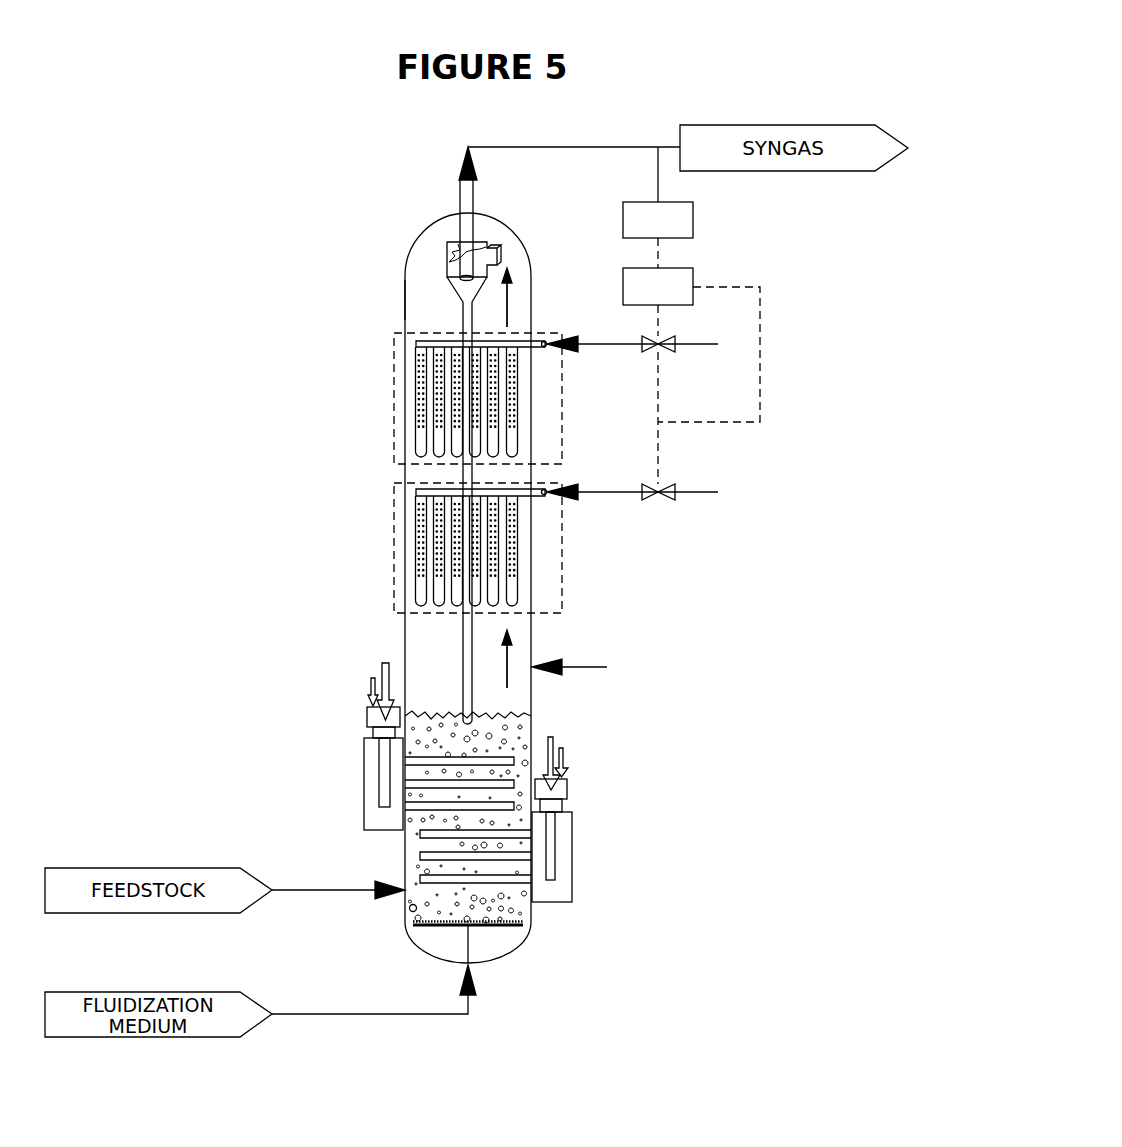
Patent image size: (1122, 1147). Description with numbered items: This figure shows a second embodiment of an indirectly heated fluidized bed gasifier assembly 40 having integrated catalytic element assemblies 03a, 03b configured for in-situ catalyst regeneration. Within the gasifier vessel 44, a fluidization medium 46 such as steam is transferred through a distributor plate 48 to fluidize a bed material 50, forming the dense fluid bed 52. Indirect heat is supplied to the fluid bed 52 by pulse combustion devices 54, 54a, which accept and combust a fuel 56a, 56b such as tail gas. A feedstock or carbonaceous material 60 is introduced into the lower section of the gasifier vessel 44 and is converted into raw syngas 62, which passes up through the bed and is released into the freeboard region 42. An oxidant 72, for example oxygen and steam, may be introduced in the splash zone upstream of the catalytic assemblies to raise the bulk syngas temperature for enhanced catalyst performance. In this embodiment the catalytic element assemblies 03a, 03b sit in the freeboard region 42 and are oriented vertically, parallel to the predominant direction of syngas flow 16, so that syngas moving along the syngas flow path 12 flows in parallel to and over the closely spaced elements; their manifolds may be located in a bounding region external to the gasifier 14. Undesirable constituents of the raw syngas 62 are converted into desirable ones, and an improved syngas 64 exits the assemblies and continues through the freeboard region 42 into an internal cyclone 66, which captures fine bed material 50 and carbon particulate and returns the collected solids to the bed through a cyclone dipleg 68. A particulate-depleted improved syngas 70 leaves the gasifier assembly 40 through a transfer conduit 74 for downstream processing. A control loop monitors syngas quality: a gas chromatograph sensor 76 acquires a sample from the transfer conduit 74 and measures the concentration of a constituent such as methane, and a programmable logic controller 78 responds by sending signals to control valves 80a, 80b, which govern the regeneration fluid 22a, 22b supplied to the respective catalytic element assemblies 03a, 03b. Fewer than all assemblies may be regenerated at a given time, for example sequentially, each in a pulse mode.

The indirectly heated fluidized bed gasifier assembly 40 is at (403, 262).
The freeboard region 42 is at (418, 290).
The gasifier vessel 44 is at (418, 313).
The syngas flow path 12 is at (487, 322).
The bounding region external to the gasifier 14 is at (549, 317).
The predominant direction of syngas flow 16 is at (509, 302).
The improved syngas 64 is at (509, 302).
The raw syngas 62 is at (509, 663).
The internal cyclone 66 is at (497, 250).
The cyclone dipleg 68 is at (462, 318).
The particulate-depleted syngas of improved quality 70 is at (543, 147).
The transfer conduit 74 is at (595, 147).
The gas chromatograph sensor 76 is at (693, 218).
The programmable logic controller 78 is at (693, 272).
The catalytic element assembly 03a is at (562, 432).
The catalytic element assembly 03b is at (562, 580).
The regeneration fluid 22a is at (602, 344).
The regeneration fluid 22b is at (602, 492).
The control valve 80a is at (658, 359).
The control valve 80b is at (658, 507).
The oxidant 72 is at (588, 667).
The fuel 56a is at (382, 664).
The pulse combustion device 54a is at (364, 770).
The fuel 56b is at (553, 743).
The pulse combustion device 54 is at (572, 842).
The carbonaceous material 60 is at (298, 890).
The fluid bed 52 is at (412, 878).
The bed material 50 is at (410, 912).
The distributor plate 48 is at (523, 928).
The fluidization medium 46 is at (298, 1014).